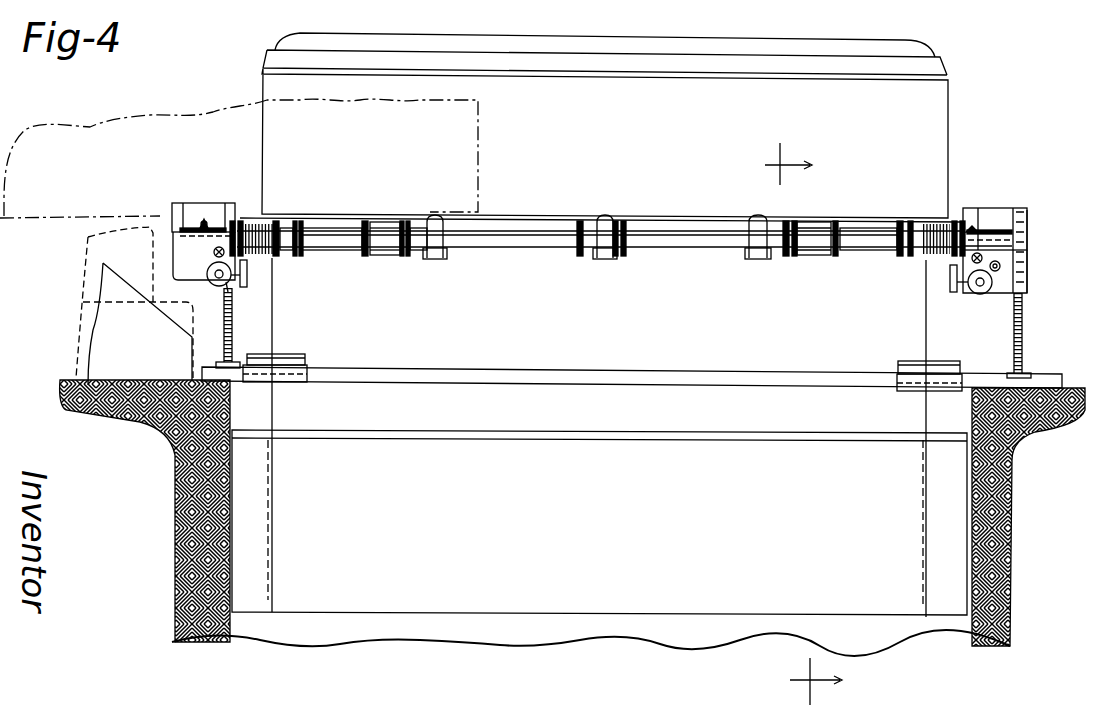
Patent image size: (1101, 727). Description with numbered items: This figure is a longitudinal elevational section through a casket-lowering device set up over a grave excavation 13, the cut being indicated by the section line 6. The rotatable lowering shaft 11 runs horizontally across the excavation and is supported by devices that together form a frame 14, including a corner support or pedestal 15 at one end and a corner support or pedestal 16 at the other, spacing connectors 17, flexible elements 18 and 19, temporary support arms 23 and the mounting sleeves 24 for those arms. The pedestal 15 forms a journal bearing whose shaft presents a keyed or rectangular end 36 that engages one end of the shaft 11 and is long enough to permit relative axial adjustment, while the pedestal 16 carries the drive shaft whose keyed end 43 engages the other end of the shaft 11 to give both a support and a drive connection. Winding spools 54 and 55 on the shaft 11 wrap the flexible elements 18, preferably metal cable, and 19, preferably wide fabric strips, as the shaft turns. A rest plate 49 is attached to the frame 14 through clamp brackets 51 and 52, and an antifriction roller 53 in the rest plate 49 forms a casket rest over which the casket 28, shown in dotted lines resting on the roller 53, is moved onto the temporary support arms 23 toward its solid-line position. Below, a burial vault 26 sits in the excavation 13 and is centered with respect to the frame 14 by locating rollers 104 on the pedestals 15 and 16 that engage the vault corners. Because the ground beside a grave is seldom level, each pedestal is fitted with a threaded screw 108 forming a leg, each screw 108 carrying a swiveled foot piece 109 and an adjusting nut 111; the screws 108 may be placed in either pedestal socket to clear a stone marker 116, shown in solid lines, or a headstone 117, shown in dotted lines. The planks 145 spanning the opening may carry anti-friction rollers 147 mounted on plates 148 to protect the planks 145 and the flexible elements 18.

The section line 6- 6 is at (803, 424).
The rotatable lowering shaft 11 is at (498, 247).
The grave excavation 13 is at (572, 518).
The frame 14 is at (985, 203).
The corner support or pedestal 15 is at (180, 203).
The corner support or pedestal 16 is at (1028, 217).
The spacing connector 17 is at (213, 254).
The flexible element 18 is at (274, 315).
The flexible element 19 is at (388, 205).
The temporary support arm 23 is at (437, 223).
The mounting sleeve 24 is at (418, 254).
The burial vault 26 is at (505, 437).
The casket 28 is at (272, 102).
The keyed or rectangular end 36 is at (240, 212).
The keyed or rectangular end 43 is at (973, 233).
The rest plate 49 is at (185, 226).
The clamp bracket 51 is at (172, 250).
The clamp bracket 52 is at (1027, 239).
The antifriction roller 53 is at (204, 220).
The winding spool 54 is at (365, 257).
The winding spool 55 is at (302, 256).
The locating roller 104 is at (236, 282).
The threaded screw 108 is at (265, 338).
The foot piece 109 is at (216, 363).
The adjusting nut 111 is at (222, 286).
The stone marker 116 is at (100, 357).
The headstone 117 is at (80, 316).
The plank 145 is at (518, 370).
The anti-friction roller 147 is at (283, 353).
The plate 148 is at (307, 372).